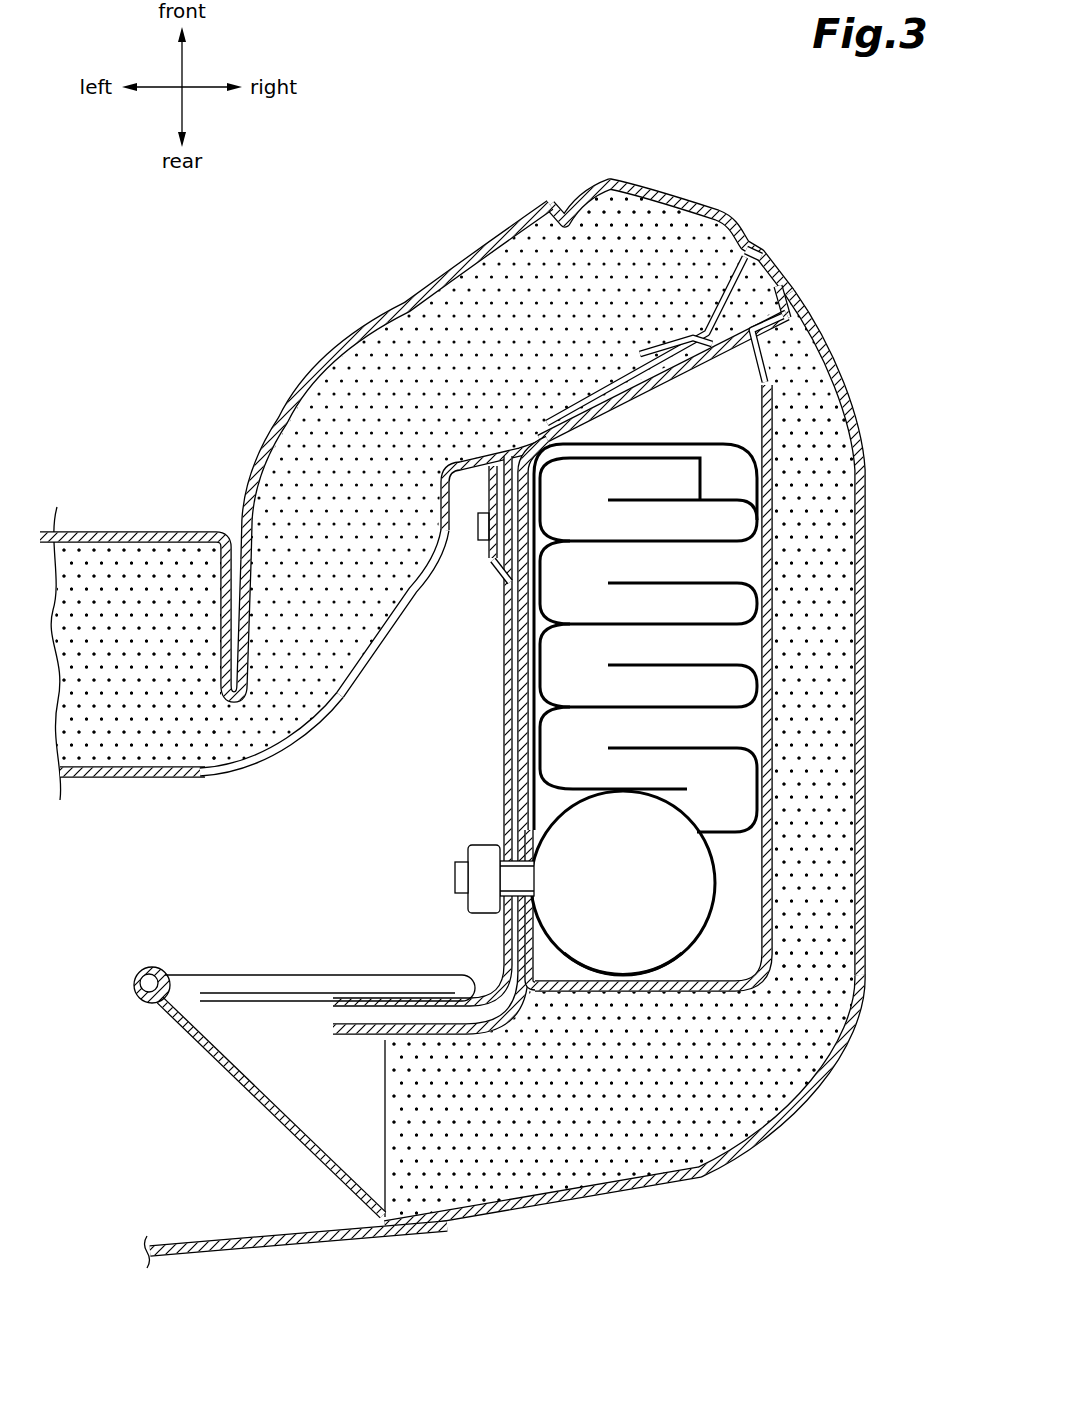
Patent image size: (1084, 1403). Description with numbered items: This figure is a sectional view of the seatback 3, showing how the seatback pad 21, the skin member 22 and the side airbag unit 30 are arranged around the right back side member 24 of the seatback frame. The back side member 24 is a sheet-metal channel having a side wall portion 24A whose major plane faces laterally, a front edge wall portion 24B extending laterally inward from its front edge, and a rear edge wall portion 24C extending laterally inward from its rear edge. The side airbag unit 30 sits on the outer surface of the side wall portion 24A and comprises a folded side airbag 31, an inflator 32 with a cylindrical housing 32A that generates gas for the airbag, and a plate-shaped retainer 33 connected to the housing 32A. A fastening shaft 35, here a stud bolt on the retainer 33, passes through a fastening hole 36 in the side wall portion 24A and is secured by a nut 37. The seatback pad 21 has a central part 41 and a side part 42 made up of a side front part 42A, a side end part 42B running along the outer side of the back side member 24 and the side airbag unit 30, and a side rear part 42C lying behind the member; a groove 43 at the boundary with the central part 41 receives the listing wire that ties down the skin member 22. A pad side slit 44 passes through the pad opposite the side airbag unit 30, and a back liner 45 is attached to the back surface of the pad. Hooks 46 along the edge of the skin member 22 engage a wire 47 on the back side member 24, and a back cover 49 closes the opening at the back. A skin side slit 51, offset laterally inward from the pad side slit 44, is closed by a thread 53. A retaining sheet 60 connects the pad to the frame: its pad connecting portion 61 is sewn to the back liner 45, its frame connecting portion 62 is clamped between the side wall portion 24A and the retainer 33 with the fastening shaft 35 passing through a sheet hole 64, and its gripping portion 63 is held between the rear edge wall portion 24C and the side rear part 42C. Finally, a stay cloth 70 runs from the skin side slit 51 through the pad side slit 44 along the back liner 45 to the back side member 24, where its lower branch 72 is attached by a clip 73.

The seatback 3 is at (501, 716).
The seatback pad 21 is at (160, 560).
The skin member 22 is at (318, 388).
The back side member 24 is at (365, 705).
The side wall portion 24A is at (508, 742).
The front edge wall portion 24B is at (443, 470).
The rear edge wall portion 24C is at (432, 1004).
The side airbag unit 30 is at (630, 779).
The side airbag 31 is at (728, 540).
The inflator 32 is at (658, 912).
The housing 32A is at (637, 948).
The retainer 33 is at (515, 930).
The fastening shaft 35 is at (458, 877).
The fastening hole 36 is at (485, 893).
The nut 37 is at (486, 862).
The central part 41 is at (95, 560).
The side part 42 is at (483, 293).
The side front part 42A is at (620, 212).
The side end part 42B is at (825, 435).
The side rear part 42C is at (606, 1165).
The groove 43 is at (228, 680).
The pad side slit 44 is at (738, 345).
The back liner 45 is at (314, 737).
The hook 46 is at (158, 967).
The wire 47 is at (270, 980).
The back cover 49 is at (289, 1243).
The skin side slit 51 is at (743, 242).
The thread 53 is at (768, 254).
The retaining sheet 60 is at (521, 632).
The pad connecting portion 61 is at (578, 438).
The frame connecting portion 62 is at (521, 668).
The gripping portion 63 is at (353, 1036).
The sheet hole 64 is at (530, 868).
The stay cloth 70 is at (790, 300).
The lower branch 72 is at (487, 488).
The clip 73 is at (502, 572).